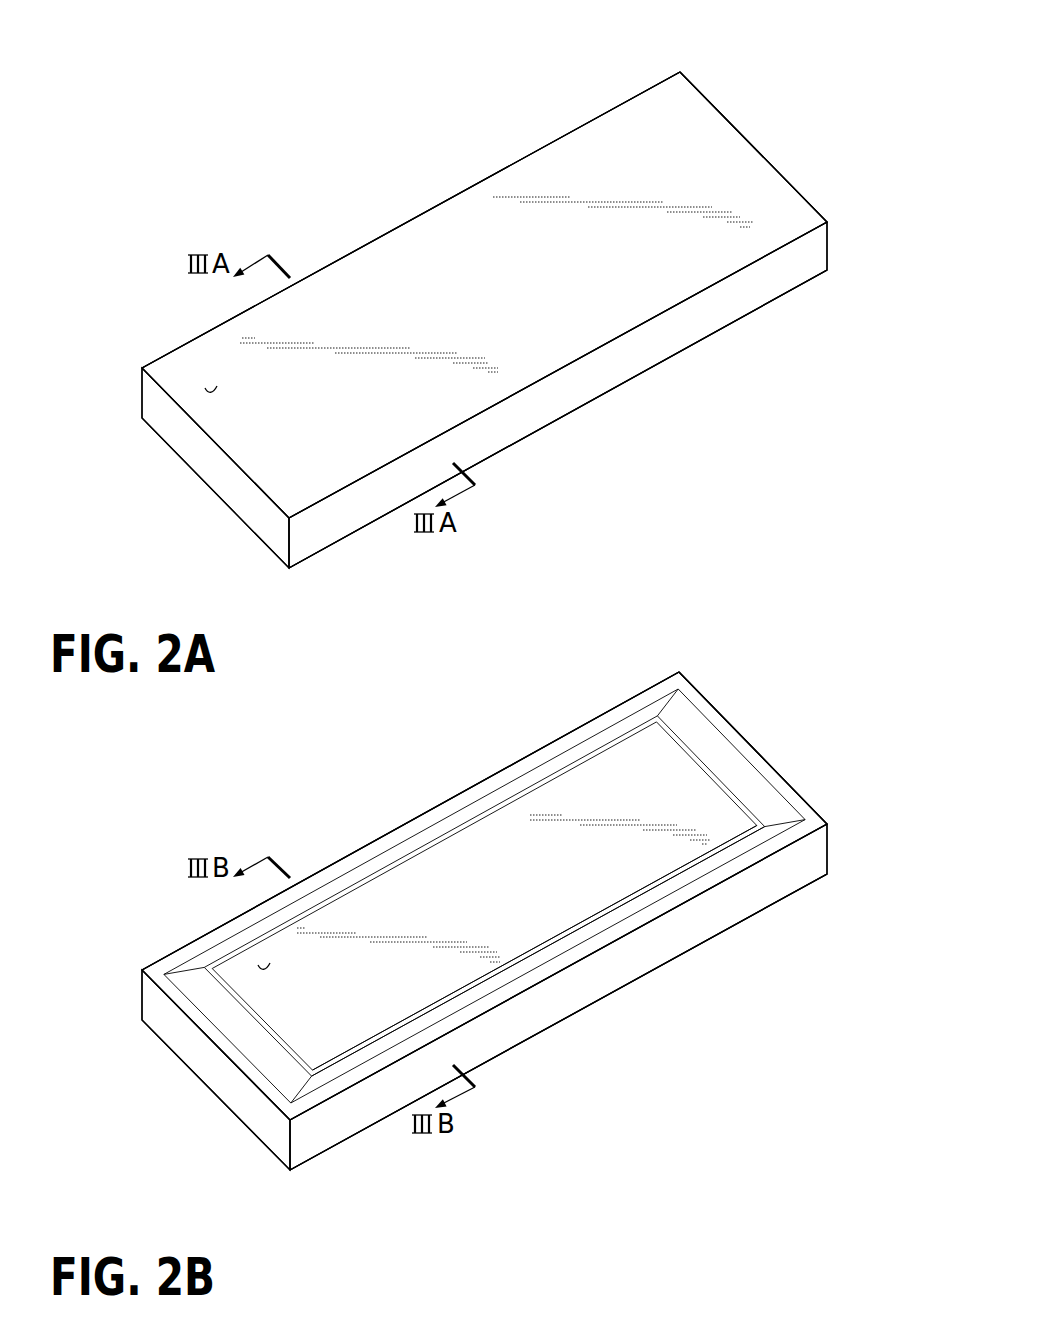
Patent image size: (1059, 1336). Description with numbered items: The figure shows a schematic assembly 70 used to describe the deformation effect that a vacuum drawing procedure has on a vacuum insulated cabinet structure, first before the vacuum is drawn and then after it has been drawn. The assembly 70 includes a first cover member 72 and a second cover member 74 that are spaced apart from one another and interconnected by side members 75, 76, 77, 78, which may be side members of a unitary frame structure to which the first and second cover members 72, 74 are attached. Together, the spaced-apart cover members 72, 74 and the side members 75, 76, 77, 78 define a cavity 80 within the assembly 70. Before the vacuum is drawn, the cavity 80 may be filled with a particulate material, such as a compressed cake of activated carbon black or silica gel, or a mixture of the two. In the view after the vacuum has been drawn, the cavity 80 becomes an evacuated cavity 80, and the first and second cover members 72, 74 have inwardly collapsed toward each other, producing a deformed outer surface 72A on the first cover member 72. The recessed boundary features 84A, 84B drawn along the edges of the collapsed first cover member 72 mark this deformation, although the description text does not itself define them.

In FIG. 2A, the schematic assembly 70 is at (448, 138).
In FIG. 2B, the schematic assembly 70 is at (618, 668).
In FIG. 2A, the first cover member 72 is at (677, 137).
In FIG. 2B, the first cover member 72 is at (665, 777).
In FIG. 2A, the deformed outer surface 72A is at (483, 303).
In FIG. 2B, the deformed outer surface 72A is at (483, 891).
In FIG. 2A, the second cover member 74 is at (627, 382).
In FIG. 2B, the second cover member 74 is at (595, 1003).
In FIG. 2A, the side member 75 is at (765, 152).
In FIG. 2B, the side member 75 is at (757, 750).
In FIG. 2A, the side member 76 is at (737, 298).
In FIG. 2B, the side member 76 is at (730, 902).
In FIG. 2A, the side member 77 is at (207, 462).
In FIG. 2B, the side member 77 is at (198, 1058).
In FIG. 2A, the side member 78 is at (343, 253).
In FIG. 2B, the side member 78 is at (445, 802).
In FIG. 2A, the cavity 80 is at (213, 385).
In FIG. 2B, the cavity 80 is at (265, 962).
In FIG. 2B, the first chamfered recess edge 84A is at (370, 870).
In FIG. 2B, the second chamfered recess edge 84B is at (463, 1002).